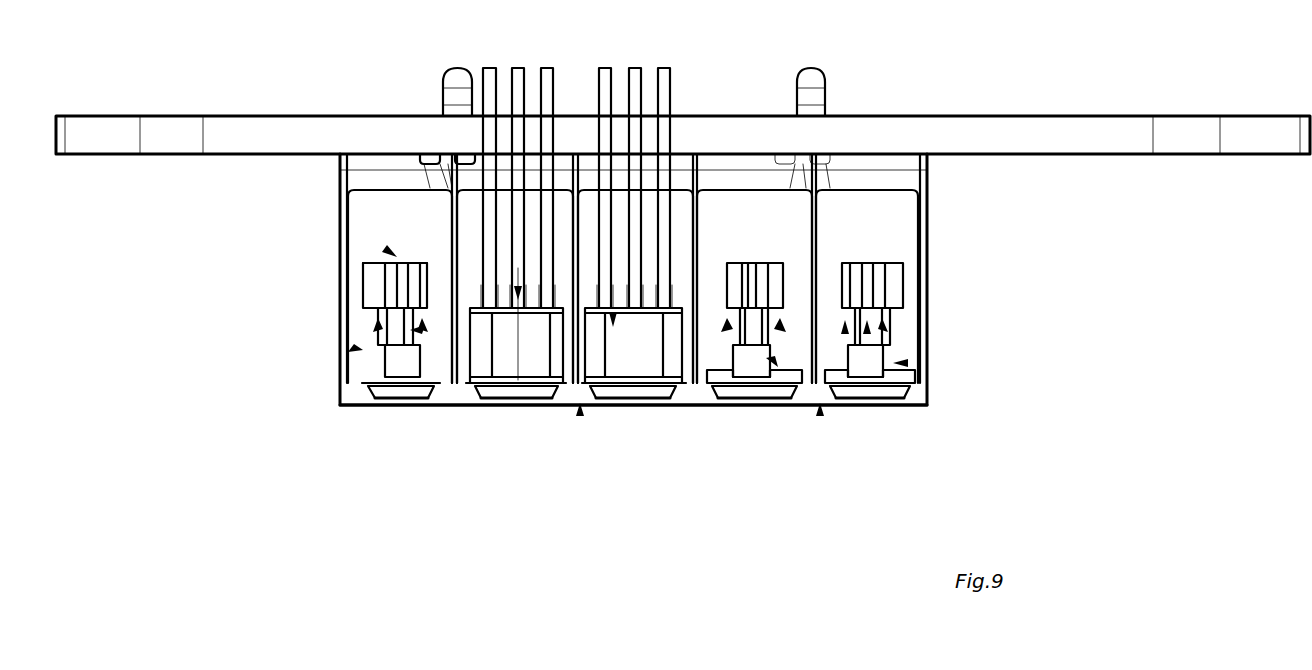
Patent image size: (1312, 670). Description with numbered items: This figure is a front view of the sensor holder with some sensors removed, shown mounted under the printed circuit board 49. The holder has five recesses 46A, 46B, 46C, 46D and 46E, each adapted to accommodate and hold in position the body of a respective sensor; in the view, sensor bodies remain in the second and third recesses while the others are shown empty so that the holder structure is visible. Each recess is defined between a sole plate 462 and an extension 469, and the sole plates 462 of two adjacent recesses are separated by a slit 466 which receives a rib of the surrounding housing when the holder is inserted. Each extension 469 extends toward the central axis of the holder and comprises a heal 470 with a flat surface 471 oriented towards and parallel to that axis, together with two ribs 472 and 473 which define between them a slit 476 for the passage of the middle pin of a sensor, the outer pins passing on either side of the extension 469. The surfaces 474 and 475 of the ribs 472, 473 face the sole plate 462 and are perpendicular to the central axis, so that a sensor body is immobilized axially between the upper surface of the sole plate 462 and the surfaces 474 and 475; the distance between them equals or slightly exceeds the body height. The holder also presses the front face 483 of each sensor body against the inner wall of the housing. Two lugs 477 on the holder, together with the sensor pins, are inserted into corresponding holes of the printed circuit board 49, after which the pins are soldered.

The printed circuit board 49 is at (1078, 125).
The lugs 477 is at (455, 87).
The front face 483 is at (612, 325).
The sole plate 462 is at (398, 392).
The recess 46A is at (360, 352).
The recess 46B is at (568, 405).
The recess 46C is at (682, 405).
The recess 46D is at (790, 405).
The recess 46E is at (895, 363).
The slit 466 is at (580, 406).
The extension 469 is at (666, 372).
The rib 472 is at (380, 286).
The rib 473 is at (415, 275).
The flat surface 471 is at (414, 332).
The heal 470 is at (388, 337).
The surface 474 is at (378, 320).
The surface 475 is at (425, 320).
The slit 476 is at (390, 252).